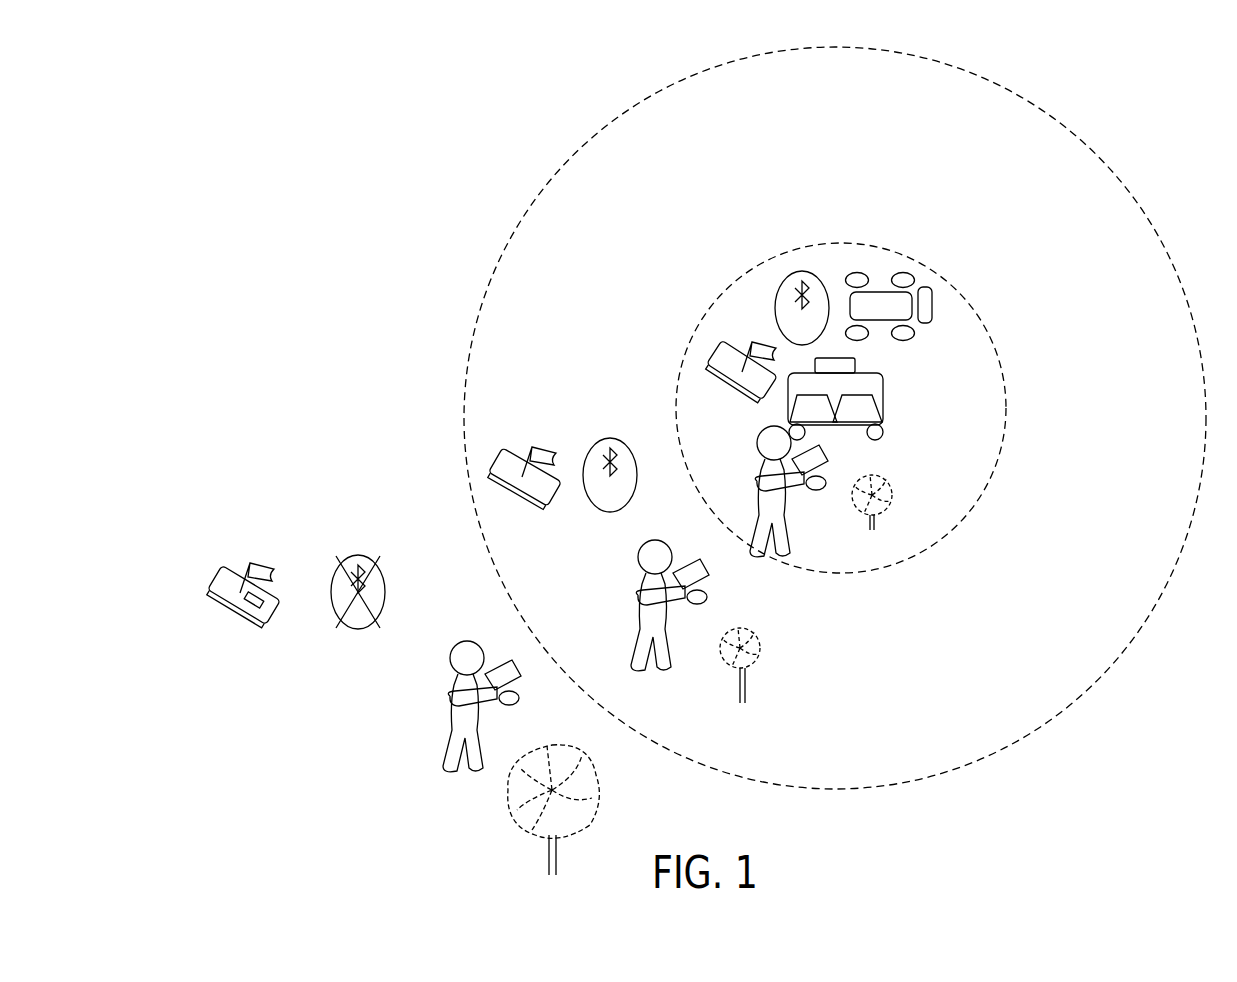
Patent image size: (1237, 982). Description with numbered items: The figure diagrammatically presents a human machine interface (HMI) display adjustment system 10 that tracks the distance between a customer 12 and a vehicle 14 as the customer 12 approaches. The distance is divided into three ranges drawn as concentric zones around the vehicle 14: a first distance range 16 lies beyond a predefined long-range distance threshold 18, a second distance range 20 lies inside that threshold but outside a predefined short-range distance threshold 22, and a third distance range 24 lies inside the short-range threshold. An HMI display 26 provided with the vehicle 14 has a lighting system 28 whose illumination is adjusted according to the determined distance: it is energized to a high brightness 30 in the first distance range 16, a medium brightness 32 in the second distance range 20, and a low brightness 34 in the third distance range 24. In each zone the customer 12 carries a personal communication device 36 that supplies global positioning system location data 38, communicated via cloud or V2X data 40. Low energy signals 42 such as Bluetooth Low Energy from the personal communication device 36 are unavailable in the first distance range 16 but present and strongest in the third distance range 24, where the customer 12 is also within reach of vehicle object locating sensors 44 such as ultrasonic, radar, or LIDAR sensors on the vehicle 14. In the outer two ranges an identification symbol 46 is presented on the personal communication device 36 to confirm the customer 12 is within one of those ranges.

The human machine interface (HMI) display adjustment system 10 is at (1150, 148).
The customer 12 is at (782, 540).
The vehicle 14 is at (900, 302).
The first distance range 16 is at (312, 449).
The predefined long-range distance threshold 18 is at (503, 247).
The second distance range 20 is at (1020, 120).
The predefined short-range distance threshold 22 is at (763, 268).
The third distance range 24 is at (878, 254).
The HMI display 26 is at (866, 408).
The lighting system 28 is at (877, 524).
The high brightness 30 is at (595, 800).
The medium brightness 32 is at (770, 655).
The low brightness 34 is at (883, 488).
The personal communication device 36 is at (505, 452).
The global positioning system (GPS) location data 38 is at (542, 452).
The V2X data 40 is at (566, 566).
The low energy signals 42 is at (800, 290).
The vehicle object locating sensors 44 is at (905, 333).
The identification symbol 46 is at (242, 610).